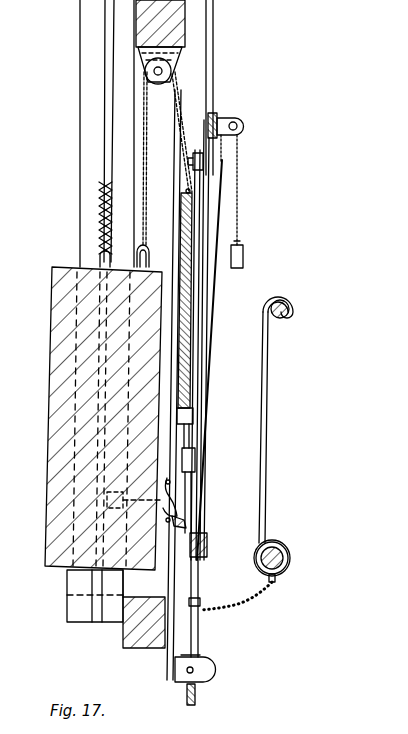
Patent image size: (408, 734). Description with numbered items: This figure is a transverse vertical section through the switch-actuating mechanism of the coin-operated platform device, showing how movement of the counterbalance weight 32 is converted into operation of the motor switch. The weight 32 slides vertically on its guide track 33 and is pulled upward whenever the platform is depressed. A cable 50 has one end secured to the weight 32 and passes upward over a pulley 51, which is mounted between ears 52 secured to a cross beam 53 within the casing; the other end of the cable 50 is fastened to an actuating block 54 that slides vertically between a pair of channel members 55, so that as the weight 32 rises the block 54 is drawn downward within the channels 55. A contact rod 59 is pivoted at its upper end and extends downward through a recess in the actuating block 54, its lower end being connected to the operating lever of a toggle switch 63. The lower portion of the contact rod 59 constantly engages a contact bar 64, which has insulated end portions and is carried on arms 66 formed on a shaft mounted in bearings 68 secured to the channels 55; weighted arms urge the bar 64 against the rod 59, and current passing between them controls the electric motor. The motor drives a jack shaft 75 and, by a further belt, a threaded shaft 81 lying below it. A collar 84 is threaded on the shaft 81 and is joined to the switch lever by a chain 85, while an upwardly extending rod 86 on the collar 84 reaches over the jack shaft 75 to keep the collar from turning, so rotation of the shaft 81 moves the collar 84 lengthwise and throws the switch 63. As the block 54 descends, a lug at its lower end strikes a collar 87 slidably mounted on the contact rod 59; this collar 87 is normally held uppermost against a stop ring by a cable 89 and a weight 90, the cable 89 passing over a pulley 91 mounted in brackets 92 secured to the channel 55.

The counterbalance weight 32 is at (58, 310).
The guide track 33 is at (85, 155).
The cable 50 is at (146, 113).
The pulley 51 is at (142, 90).
The ears 52 is at (140, 59).
The cross beam 53 is at (136, 24).
The actuating block 54 is at (193, 215).
The channel members 55 is at (210, 50).
The contact rod 59 is at (196, 428).
The toggle switch 63 is at (211, 667).
The contact bar 64 is at (200, 560).
The arms 66 is at (185, 516).
The bearings 68 is at (170, 497).
The jack shaft 75 is at (289, 291).
The threaded shaft 81 is at (289, 540).
The collar 84 is at (284, 570).
The chain 85 is at (245, 602).
The rod 86 is at (270, 372).
The collar 87 is at (197, 459).
The cable 89 is at (216, 290).
The weight 90 is at (243, 252).
The pulley 91 is at (242, 120).
The brackets 92 is at (218, 119).